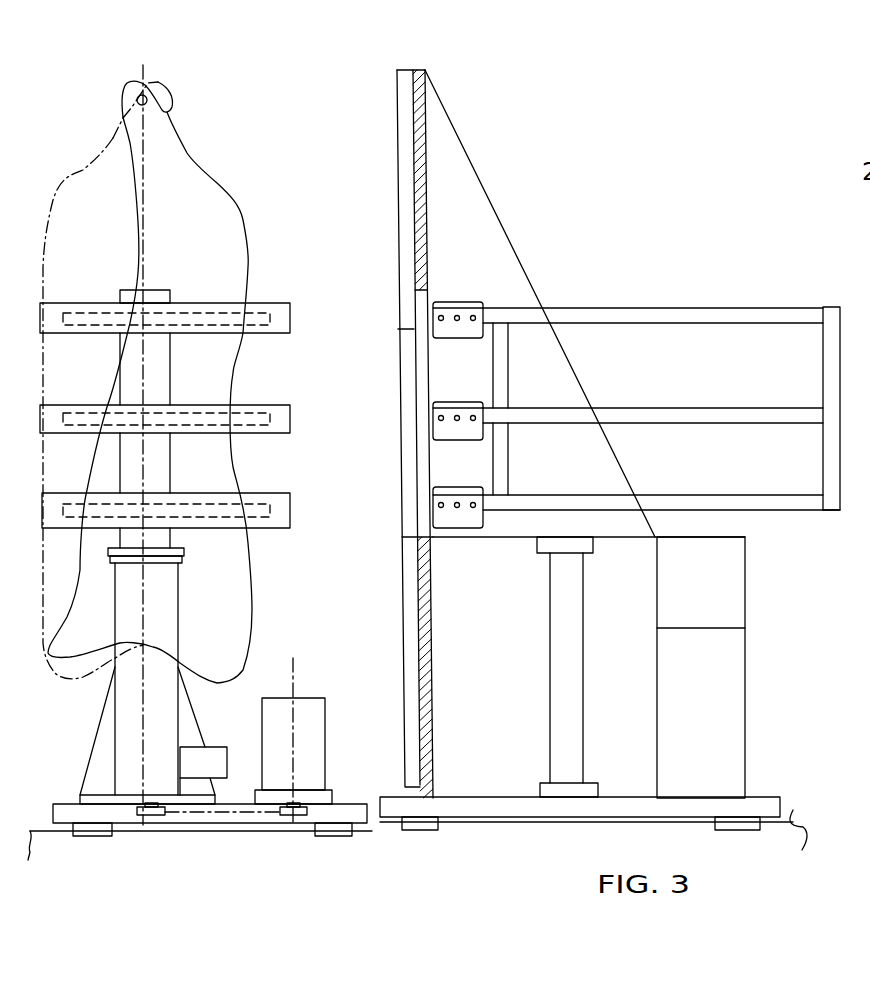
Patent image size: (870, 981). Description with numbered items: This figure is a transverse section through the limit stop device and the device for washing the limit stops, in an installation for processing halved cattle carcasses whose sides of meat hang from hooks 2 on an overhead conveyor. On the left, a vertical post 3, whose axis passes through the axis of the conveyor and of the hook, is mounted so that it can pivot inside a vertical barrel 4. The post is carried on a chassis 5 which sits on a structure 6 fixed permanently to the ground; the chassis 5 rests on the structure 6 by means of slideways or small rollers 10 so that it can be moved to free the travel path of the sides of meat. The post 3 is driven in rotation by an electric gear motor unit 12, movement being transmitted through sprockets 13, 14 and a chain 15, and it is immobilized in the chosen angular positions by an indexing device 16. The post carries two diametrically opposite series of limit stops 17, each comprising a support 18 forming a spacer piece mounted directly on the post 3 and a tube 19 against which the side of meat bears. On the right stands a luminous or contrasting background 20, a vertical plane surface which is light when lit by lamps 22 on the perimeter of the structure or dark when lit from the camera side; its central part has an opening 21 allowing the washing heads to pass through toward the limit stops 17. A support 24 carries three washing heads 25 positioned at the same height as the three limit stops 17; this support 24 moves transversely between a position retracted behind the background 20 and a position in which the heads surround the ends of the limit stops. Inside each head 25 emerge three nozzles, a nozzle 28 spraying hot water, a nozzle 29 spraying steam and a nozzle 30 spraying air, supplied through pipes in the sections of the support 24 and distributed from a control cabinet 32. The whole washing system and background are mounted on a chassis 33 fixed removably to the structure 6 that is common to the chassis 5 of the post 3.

The hooks 2 is at (172, 107).
The vertical post 3 is at (163, 539).
The vertical barrel 4 is at (163, 602).
The chassis 5 is at (353, 807).
The structure 6 is at (790, 817).
The slideways or small rollers 10 is at (88, 832).
The electric gear motor unit 12 is at (320, 743).
The sprocket 13 is at (285, 818).
The sprocket 14 is at (150, 815).
The chain 15 is at (212, 826).
The indexing device 16 is at (215, 761).
The limit stops 17 is at (320, 296).
The support 18 is at (280, 347).
The tube 19 is at (263, 317).
The background 20 is at (418, 615).
The opening 21 is at (420, 480).
The lamps 22 is at (404, 645).
The support 24 is at (726, 292).
The washing heads 25 is at (468, 487).
The nozzle 28 is at (478, 505).
The nozzle 29 is at (462, 508).
The nozzle 30 is at (445, 506).
The control cabinet 32 is at (745, 606).
The chassis 33 is at (575, 715).